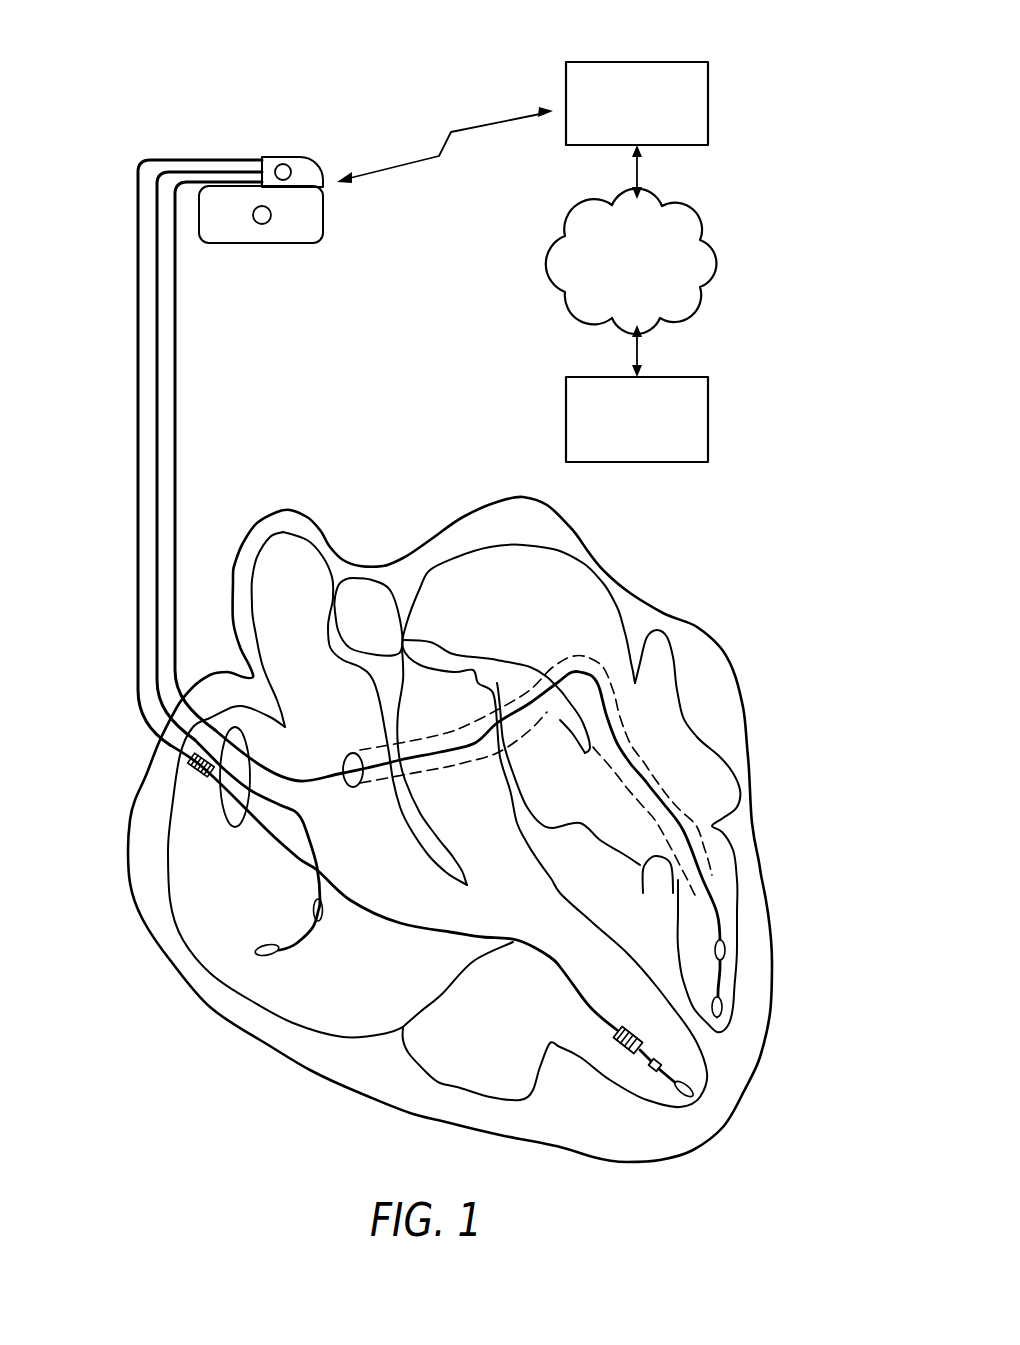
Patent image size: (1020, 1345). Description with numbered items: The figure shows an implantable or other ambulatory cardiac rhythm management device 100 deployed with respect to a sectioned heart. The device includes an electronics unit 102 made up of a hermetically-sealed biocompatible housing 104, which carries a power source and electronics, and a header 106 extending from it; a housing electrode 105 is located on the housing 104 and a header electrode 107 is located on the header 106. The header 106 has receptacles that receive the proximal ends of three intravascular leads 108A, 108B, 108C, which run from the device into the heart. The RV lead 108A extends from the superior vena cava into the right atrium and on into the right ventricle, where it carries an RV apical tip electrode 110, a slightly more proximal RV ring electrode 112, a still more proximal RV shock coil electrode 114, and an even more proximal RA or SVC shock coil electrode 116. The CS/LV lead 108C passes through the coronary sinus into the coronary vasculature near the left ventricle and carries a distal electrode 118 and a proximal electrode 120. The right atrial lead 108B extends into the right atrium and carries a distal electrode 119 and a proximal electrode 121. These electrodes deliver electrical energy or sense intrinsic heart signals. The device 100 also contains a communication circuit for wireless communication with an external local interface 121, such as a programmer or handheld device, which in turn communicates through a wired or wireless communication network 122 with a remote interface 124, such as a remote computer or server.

The cardiac rhythm management device 100 is at (134, 114).
The electronics unit 102 is at (262, 244).
The housing 104 is at (327, 212).
The housing electrode 105 is at (260, 218).
The header 106 is at (320, 167).
The header electrode 107 is at (284, 168).
The RV lead 108A is at (138, 223).
The right atrial lead 108B is at (157, 262).
The CS/LV lead 108C is at (175, 300).
The RV apical tip electrode 110 is at (680, 1094).
The RV ring electrode 112 is at (653, 1073).
The RV shock coil electrode 114 is at (622, 1046).
The RA or SVC shock coil electrode 116 is at (200, 782).
The distal electrode 118 is at (722, 1003).
The distal electrode 119 is at (265, 946).
The proximal electrode 120 is at (726, 942).
The proximal electrode / local interface 121 is at (637, 62).
The communication network 122 is at (700, 217).
The remote interface 124 is at (664, 379).